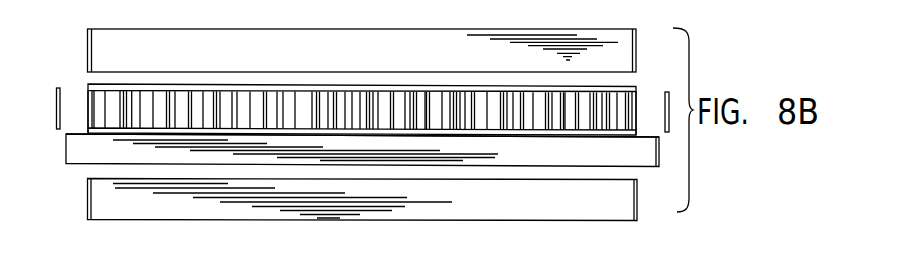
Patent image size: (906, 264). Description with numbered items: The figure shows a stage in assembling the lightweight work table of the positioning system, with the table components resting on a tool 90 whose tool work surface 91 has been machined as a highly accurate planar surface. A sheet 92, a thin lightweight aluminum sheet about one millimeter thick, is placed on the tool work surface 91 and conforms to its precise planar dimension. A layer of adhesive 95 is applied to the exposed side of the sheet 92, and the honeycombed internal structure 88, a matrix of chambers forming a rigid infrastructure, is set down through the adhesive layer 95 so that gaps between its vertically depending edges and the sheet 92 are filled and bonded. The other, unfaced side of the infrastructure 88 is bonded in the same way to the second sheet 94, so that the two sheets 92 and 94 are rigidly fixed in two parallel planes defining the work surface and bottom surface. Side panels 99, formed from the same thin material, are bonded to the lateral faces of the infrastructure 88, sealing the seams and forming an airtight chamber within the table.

The honeycombed internal structure 88 is at (437, 102).
The tool 90 is at (76, 149).
The tool work surface 91 is at (69, 126).
The sheet 92 is at (165, 83).
The sheet 94 is at (567, 135).
The adhesive layer 95 is at (89, 128).
The side panels 99 is at (87, 47).